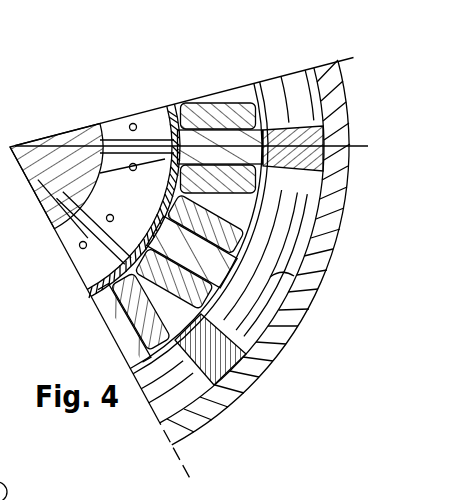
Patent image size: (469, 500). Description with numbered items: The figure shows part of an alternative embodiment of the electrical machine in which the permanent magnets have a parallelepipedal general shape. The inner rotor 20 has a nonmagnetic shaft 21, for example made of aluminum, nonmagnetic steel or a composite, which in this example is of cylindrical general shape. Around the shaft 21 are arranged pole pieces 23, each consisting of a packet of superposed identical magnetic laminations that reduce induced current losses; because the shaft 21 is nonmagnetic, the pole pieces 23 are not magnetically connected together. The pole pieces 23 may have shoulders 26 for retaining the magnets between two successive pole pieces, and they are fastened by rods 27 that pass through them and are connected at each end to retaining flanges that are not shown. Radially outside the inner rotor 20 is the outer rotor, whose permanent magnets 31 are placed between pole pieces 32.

The inner rotor 20 is at (115, 117).
The shaft 21 is at (72, 139).
The pole pieces 23 is at (58, 213).
The shoulders 26 is at (170, 103).
The rods 27 is at (132, 123).
The permanent magnets 31 is at (330, 148).
The pole pieces 32 is at (318, 292).